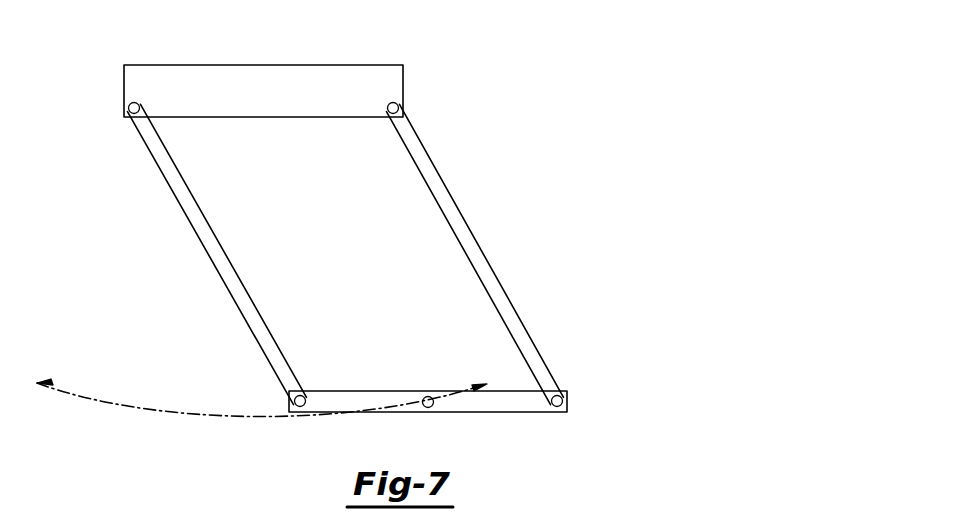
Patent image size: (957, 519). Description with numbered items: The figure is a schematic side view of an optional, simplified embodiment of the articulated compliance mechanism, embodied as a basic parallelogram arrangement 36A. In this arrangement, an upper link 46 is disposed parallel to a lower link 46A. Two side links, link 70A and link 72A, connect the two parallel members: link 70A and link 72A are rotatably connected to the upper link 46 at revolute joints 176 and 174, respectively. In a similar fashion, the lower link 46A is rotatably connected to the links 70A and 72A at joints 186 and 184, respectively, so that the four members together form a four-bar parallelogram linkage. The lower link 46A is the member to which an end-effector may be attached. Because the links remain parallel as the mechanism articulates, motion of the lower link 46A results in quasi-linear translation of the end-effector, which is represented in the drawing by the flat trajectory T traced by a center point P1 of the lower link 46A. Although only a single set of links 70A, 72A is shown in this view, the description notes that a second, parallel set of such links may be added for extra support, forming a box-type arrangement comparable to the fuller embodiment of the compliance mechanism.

The parallelogram arrangement 36A is at (537, 115).
The upper link 46 is at (230, 78).
The lower link 46A is at (346, 391).
The link 72A is at (249, 288).
The link 70A is at (522, 315).
The revolute joint 174 is at (129, 107).
The revolute joint 176 is at (399, 107).
The joint 184 is at (294, 400).
The joint 186 is at (563, 402).
The center point P1 is at (432, 408).
The trajectory T is at (173, 415).